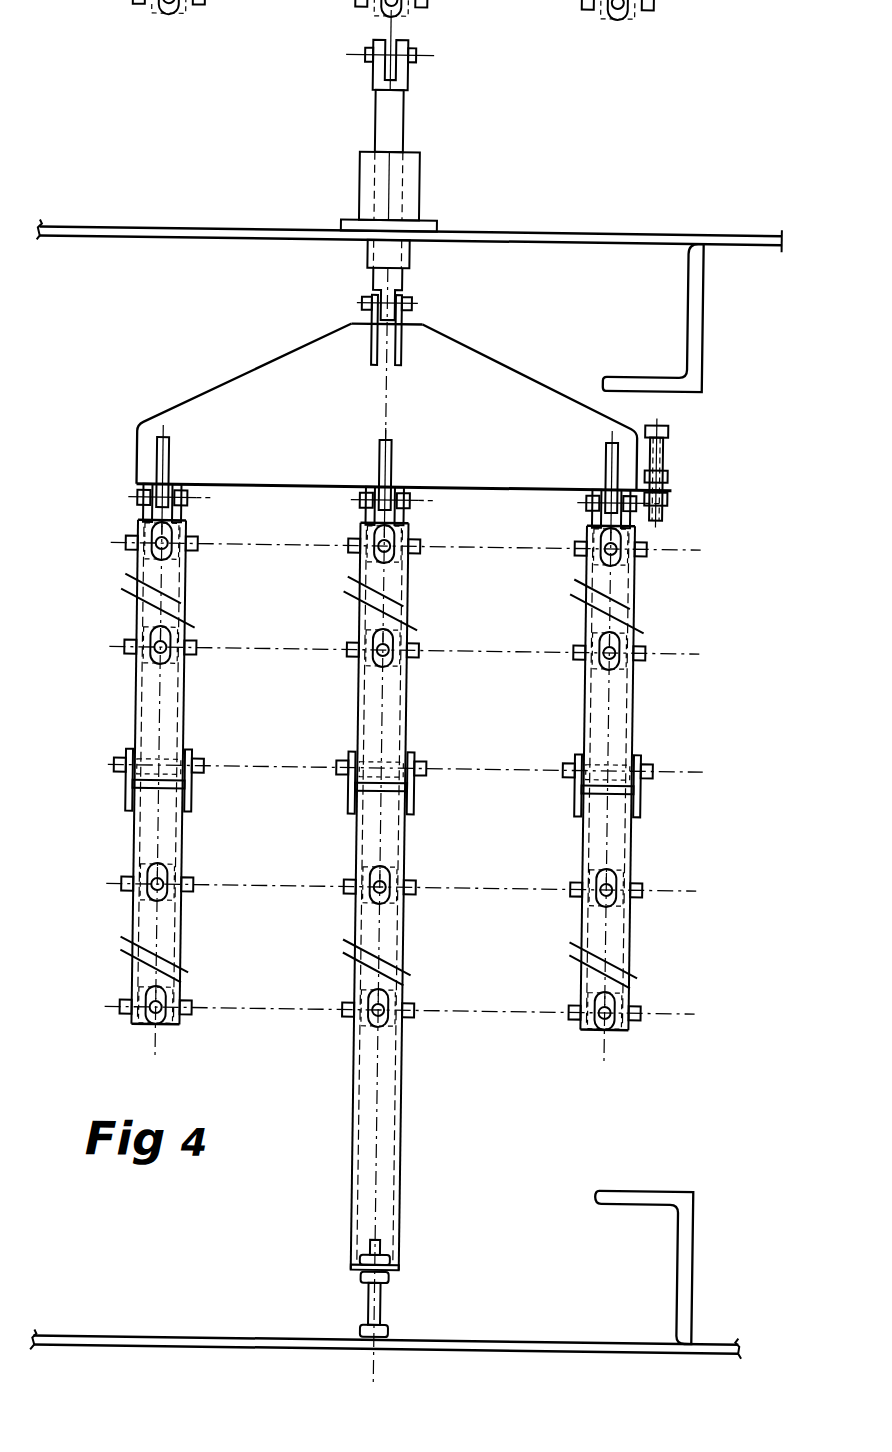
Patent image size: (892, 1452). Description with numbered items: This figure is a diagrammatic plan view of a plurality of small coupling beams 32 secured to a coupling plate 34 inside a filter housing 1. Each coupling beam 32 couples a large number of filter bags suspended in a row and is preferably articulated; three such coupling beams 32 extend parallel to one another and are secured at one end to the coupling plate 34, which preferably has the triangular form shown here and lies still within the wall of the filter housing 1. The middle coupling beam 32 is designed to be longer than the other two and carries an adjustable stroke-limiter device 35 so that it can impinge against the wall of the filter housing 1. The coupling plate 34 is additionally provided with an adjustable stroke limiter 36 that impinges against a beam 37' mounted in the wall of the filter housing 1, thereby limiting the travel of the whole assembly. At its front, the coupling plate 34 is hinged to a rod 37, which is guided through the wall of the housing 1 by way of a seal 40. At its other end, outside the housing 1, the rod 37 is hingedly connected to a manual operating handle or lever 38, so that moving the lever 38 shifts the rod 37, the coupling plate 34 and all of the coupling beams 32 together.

The filter housing 1 is at (402, 769).
The coupling beam 32 is at (399, 1080).
The coupling plate 34 is at (553, 428).
The adjustable stroke-limiter device 35 is at (419, 1305).
The adjustable stroke limiter 36 is at (668, 427).
The rod 37 is at (324, 120).
The beam 37' is at (692, 318).
The manual operating handle or lever 38 is at (382, 40).
The seal 40 is at (414, 163).